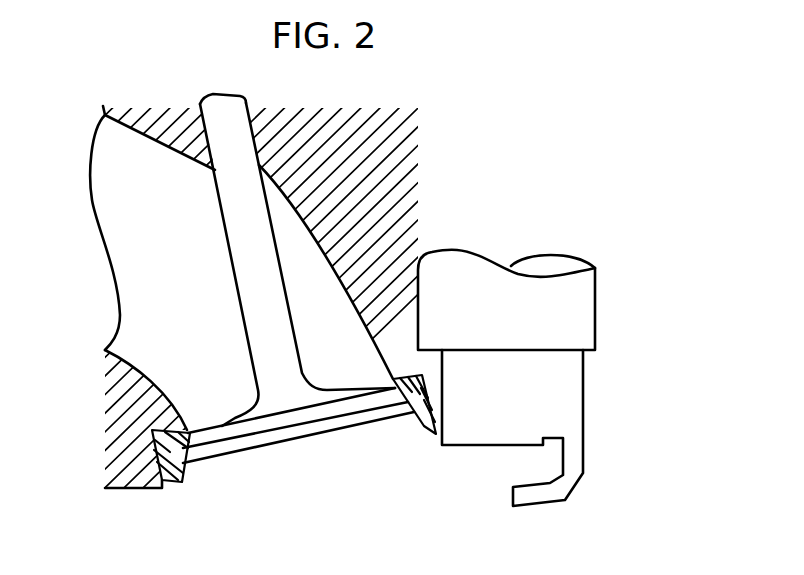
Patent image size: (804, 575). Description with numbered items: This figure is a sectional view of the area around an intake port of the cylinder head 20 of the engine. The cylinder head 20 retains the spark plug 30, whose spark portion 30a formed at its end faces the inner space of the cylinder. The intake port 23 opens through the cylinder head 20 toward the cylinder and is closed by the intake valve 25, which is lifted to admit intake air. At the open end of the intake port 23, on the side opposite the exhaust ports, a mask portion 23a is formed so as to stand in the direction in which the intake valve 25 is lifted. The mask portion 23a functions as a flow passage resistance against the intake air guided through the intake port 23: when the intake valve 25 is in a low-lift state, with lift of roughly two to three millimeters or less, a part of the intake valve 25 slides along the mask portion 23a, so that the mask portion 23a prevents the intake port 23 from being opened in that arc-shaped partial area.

The cylinder head 20 is at (415, 168).
The intake port 23 is at (415, 412).
The mask portion 23a is at (183, 468).
The intake valve 25 is at (238, 415).
The spark plug 30 is at (549, 267).
The spark portion 30a is at (507, 467).